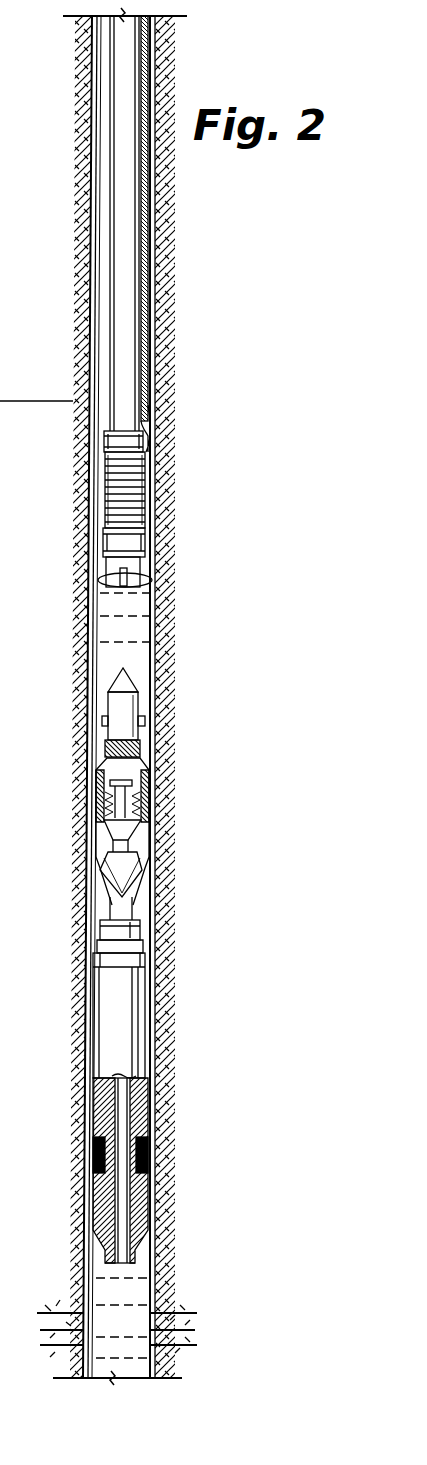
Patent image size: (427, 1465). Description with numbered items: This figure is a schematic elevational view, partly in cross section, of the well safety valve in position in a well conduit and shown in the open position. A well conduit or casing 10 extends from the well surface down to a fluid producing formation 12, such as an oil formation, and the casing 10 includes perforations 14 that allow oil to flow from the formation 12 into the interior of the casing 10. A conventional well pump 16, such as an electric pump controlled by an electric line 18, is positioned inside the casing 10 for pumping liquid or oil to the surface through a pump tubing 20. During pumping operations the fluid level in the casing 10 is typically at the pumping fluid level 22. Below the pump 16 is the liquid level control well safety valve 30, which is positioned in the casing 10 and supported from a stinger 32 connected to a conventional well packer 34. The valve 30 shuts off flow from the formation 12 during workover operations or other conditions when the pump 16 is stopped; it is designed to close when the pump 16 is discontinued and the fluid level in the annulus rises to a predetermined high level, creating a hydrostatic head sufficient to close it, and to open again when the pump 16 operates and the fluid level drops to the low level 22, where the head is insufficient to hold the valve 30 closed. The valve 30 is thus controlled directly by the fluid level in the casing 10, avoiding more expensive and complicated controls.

The well conduit or casing 10 is at (168, 218).
The fluid producing formation 12 is at (180, 1323).
The perforations 14 is at (150, 1313).
The well pump 16 is at (148, 478).
The electric line 18 is at (148, 302).
The pump tubing 20 is at (123, 197).
The pumping fluid level 22 is at (148, 398).
The well safety valve 30 is at (150, 794).
The stinger 32 is at (138, 1028).
The well packer 34 is at (153, 1154).